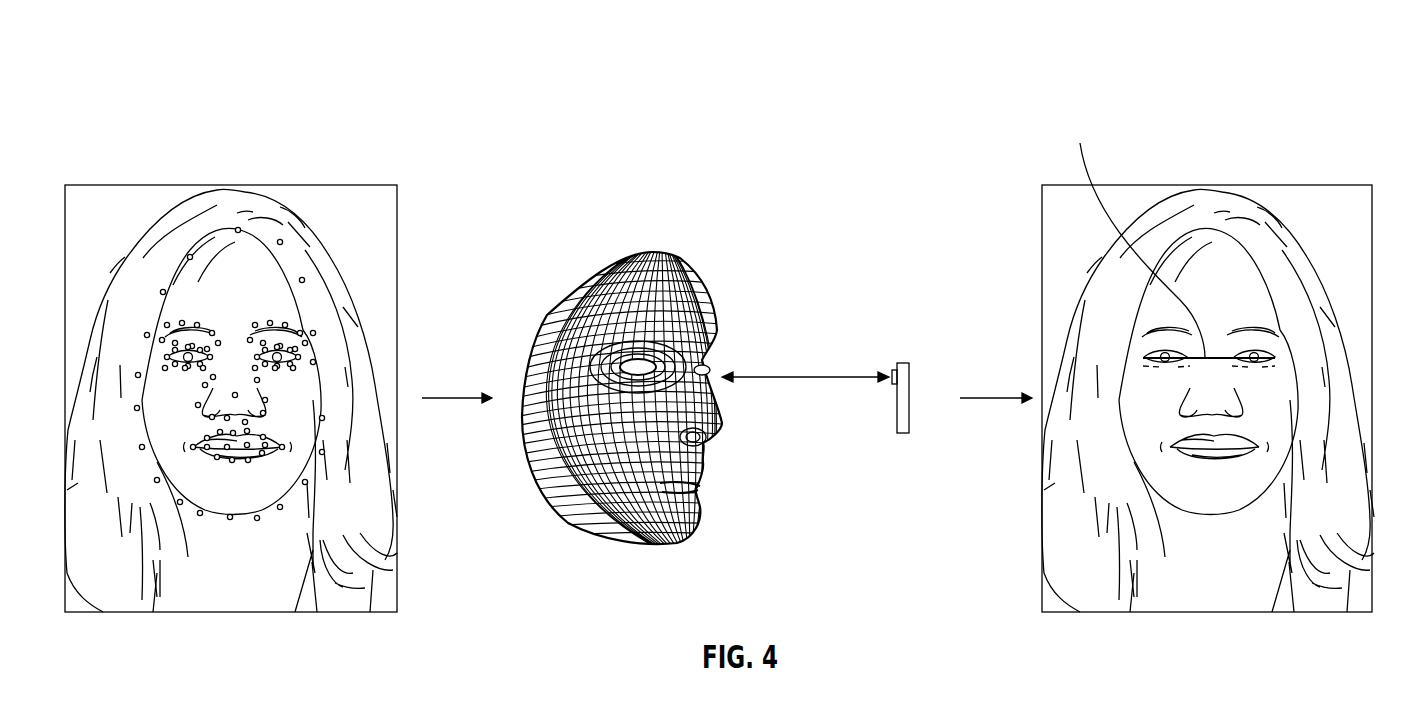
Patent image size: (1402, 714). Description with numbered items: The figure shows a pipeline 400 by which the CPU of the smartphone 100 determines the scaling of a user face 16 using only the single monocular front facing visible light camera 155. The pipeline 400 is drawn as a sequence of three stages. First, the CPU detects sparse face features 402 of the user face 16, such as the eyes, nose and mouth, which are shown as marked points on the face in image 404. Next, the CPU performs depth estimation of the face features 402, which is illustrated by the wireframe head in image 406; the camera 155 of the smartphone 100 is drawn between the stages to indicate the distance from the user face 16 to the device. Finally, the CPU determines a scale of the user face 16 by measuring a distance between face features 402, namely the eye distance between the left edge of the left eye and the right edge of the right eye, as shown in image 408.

The pipeline 400 is at (112, 108).
The image 404 is at (133, 185).
The face features 402 is at (315, 362).
The user face 16 is at (292, 410).
The image 406 is at (690, 275).
The front facing visible light camera 155 is at (893, 372).
The smartphone 100 is at (909, 364).
The image 408 is at (1305, 185).